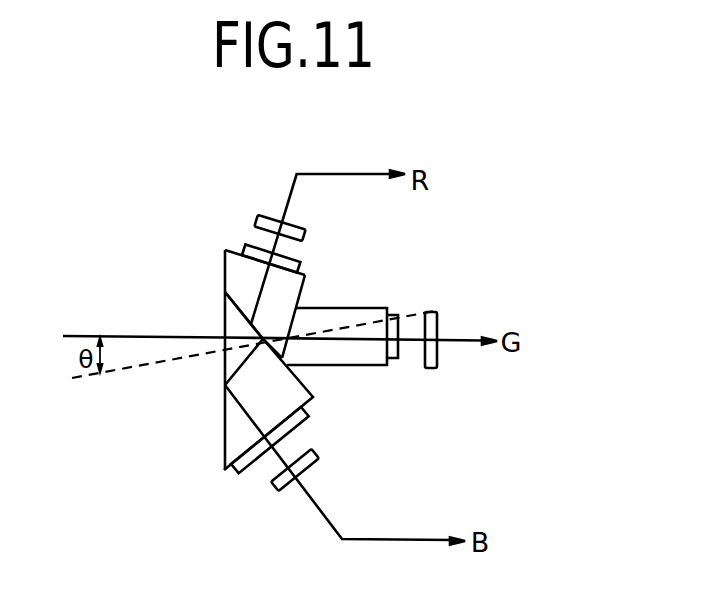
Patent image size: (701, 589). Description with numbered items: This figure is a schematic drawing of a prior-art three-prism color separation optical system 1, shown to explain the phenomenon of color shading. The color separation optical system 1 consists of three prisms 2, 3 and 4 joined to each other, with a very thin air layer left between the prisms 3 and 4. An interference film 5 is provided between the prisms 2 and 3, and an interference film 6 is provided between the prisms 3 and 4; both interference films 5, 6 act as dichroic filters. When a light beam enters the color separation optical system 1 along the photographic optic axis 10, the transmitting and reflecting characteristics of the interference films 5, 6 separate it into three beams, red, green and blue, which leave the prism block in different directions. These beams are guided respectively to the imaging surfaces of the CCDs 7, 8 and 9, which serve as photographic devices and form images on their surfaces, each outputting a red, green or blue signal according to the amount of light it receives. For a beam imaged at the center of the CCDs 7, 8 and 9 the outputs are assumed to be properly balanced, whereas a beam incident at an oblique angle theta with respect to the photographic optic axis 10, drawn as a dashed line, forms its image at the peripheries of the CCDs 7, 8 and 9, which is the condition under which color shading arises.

The color separation optical system 1 is at (218, 223).
The prism 2 is at (320, 305).
The prism 3 is at (227, 265).
The prism 4 is at (240, 430).
The interference film 5 is at (321, 306).
The interference film 6 is at (237, 316).
The CCD 7 is at (267, 214).
The CCD 8 is at (438, 326).
The CCD 9 is at (318, 466).
The photographic optic axis 10 is at (140, 335).